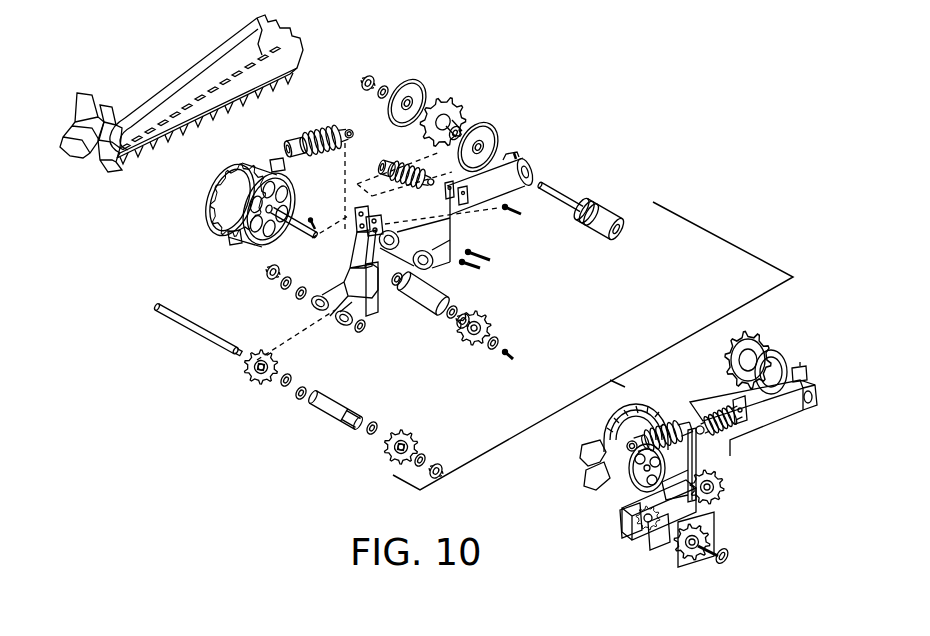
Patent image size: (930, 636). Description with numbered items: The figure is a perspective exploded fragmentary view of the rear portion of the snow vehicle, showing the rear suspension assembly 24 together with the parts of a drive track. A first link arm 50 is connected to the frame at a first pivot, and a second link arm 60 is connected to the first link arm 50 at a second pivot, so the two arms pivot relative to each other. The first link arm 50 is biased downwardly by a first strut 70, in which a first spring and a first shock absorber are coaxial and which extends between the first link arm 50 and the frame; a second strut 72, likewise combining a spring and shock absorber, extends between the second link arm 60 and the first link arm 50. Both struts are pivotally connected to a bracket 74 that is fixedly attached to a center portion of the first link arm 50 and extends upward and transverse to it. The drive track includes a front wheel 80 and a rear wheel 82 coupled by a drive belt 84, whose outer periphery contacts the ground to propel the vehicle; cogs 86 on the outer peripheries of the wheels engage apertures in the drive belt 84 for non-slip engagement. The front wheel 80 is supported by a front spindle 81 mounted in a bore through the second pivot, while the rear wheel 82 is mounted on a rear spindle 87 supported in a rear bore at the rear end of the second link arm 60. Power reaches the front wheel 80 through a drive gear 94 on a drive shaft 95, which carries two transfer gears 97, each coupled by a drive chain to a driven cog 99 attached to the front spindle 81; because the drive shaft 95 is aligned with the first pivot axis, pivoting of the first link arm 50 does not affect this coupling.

The rear suspension assembly 24 is at (601, 67).
The first link arm 50 is at (378, 306).
The second link arm 60 is at (517, 173).
The first strut 70 is at (310, 127).
The second strut 72 is at (400, 160).
The bracket 74 is at (352, 246).
The front wheel 80 is at (214, 214).
The front spindle 81 is at (310, 212).
The rear wheel 82 is at (417, 86).
The drive belt 84 is at (188, 88).
The cogs 86 is at (458, 100).
The rear spindle 87 is at (583, 196).
The drive gear 94 is at (419, 432).
The drive shaft 95 is at (188, 332).
The transfer gears 97 is at (250, 380).
The driven cog 99 is at (489, 306).